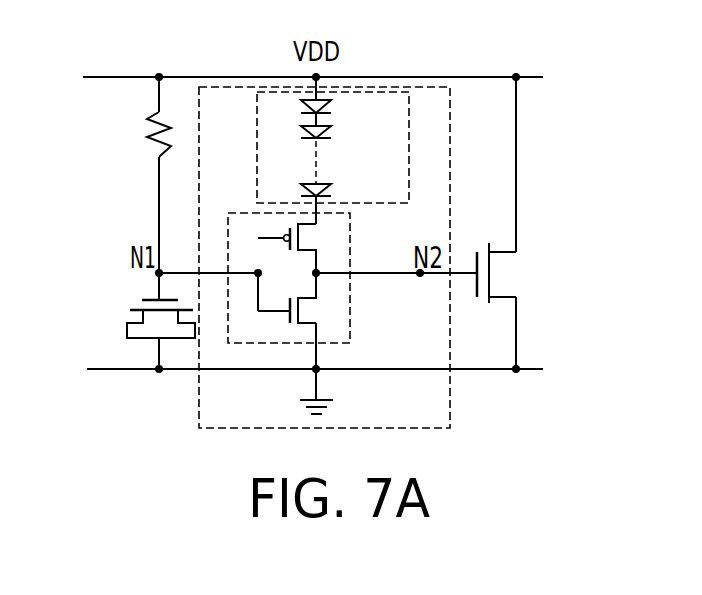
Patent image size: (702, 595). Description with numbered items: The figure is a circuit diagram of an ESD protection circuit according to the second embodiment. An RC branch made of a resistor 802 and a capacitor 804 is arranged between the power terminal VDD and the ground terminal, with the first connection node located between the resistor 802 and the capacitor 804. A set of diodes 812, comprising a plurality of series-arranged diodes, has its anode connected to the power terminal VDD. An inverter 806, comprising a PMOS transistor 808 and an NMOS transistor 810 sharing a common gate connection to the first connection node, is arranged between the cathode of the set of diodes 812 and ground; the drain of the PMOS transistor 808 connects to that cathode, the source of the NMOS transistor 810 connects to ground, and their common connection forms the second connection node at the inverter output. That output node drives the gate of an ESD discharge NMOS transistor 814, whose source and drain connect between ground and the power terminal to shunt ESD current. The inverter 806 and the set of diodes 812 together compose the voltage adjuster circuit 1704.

The resistor 802 is at (150, 139).
The capacitor 804 is at (135, 310).
The inverter 806 is at (350, 255).
The PMOS transistor 808 is at (297, 224).
The NMOS transistor 810 is at (303, 313).
The set of diodes 812 is at (409, 174).
The ESD discharge NMOS transistor 814 is at (490, 277).
The voltage adjuster circuit 1704 is at (452, 405).